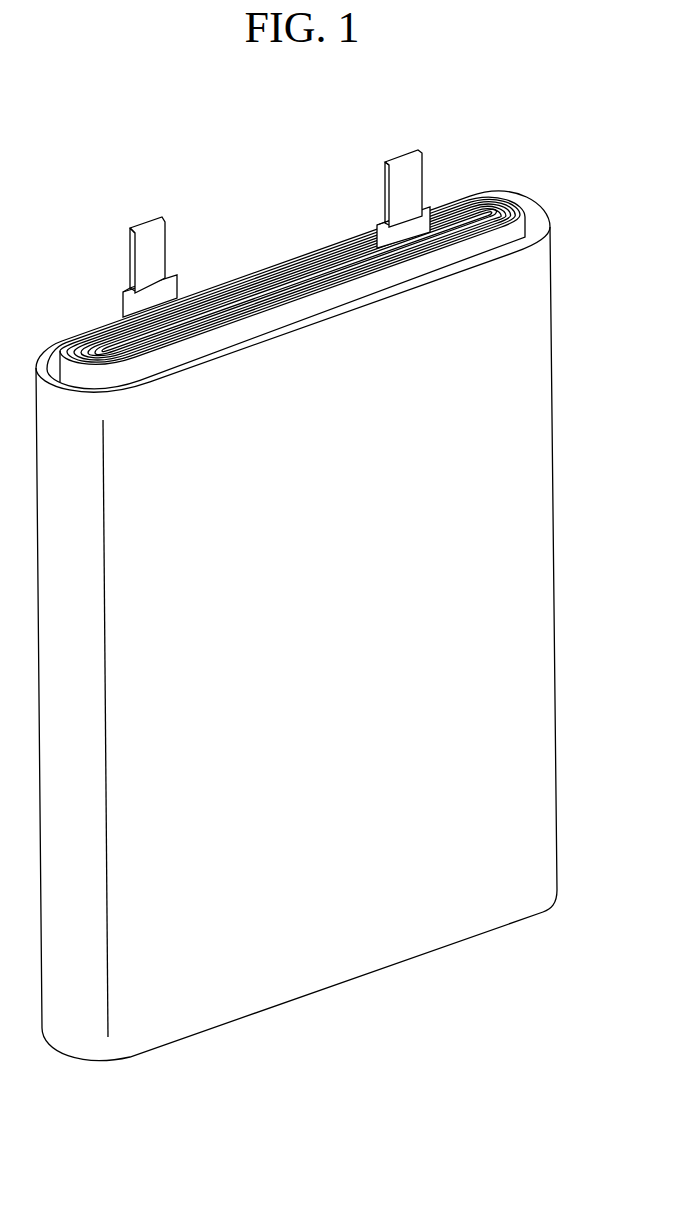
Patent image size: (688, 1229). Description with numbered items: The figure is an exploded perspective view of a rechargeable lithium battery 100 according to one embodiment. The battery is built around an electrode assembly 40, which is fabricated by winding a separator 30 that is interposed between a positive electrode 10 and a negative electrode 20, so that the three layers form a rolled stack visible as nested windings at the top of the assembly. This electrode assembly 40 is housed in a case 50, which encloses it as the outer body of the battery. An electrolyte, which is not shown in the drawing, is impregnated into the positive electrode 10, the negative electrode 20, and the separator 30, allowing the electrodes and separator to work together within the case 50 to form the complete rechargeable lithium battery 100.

The rechargeable lithium battery 100 is at (137, 157).
The positive electrode 10 is at (307, 262).
The negative electrode 20 is at (490, 205).
The separator 30 is at (505, 208).
The electrode assembly 40 is at (338, 226).
The case 50 is at (508, 587).